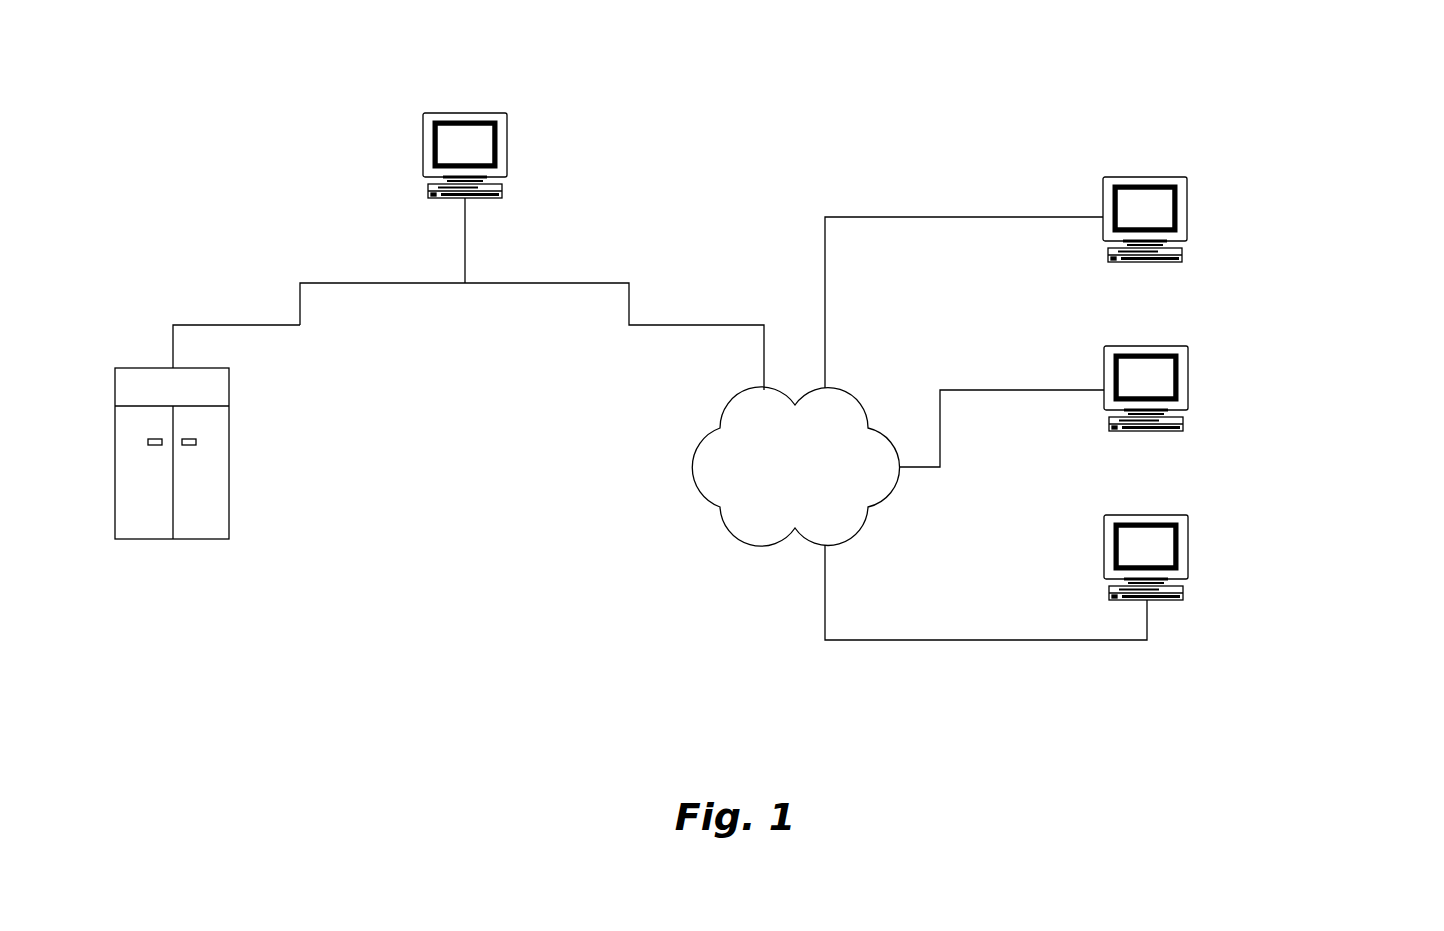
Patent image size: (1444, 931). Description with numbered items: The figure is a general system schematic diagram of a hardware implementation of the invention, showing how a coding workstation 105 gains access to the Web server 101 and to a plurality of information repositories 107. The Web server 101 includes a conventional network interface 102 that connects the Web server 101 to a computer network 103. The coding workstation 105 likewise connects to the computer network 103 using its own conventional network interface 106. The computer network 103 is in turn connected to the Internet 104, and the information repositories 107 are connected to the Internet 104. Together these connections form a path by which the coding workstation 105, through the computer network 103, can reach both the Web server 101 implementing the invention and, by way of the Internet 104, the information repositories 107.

The Web server 101 is at (173, 494).
The network interface 102 is at (170, 367).
The computer network 103 is at (532, 336).
The Internet 104 is at (795, 466).
The coding workstation 105 is at (463, 117).
The network interface 106 is at (464, 200).
The information repositories 107 is at (1228, 220).